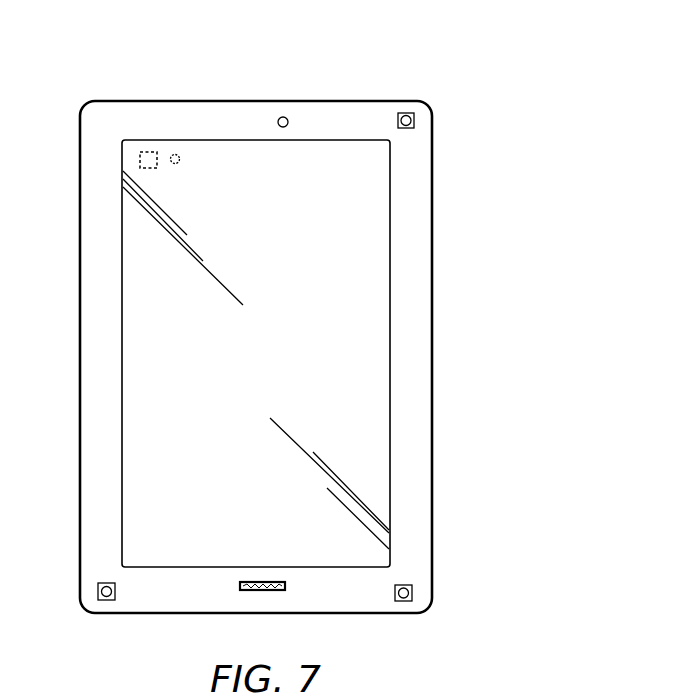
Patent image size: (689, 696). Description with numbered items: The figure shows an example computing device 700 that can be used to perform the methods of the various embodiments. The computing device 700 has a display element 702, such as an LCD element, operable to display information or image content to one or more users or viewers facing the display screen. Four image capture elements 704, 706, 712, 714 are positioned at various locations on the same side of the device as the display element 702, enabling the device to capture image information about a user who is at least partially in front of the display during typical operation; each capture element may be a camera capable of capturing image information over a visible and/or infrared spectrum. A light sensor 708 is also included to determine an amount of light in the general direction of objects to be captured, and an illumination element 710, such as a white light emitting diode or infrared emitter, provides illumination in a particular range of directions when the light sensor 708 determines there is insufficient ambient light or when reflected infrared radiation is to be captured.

The computing device 700 is at (581, 97).
The display element 702 is at (121, 151).
The image capture element 704 is at (145, 152).
The image capture element 706 is at (408, 113).
The light sensor 708 is at (287, 117).
The illumination element 710 is at (172, 153).
The image capture element 712 is at (107, 600).
The image capture element 714 is at (403, 601).